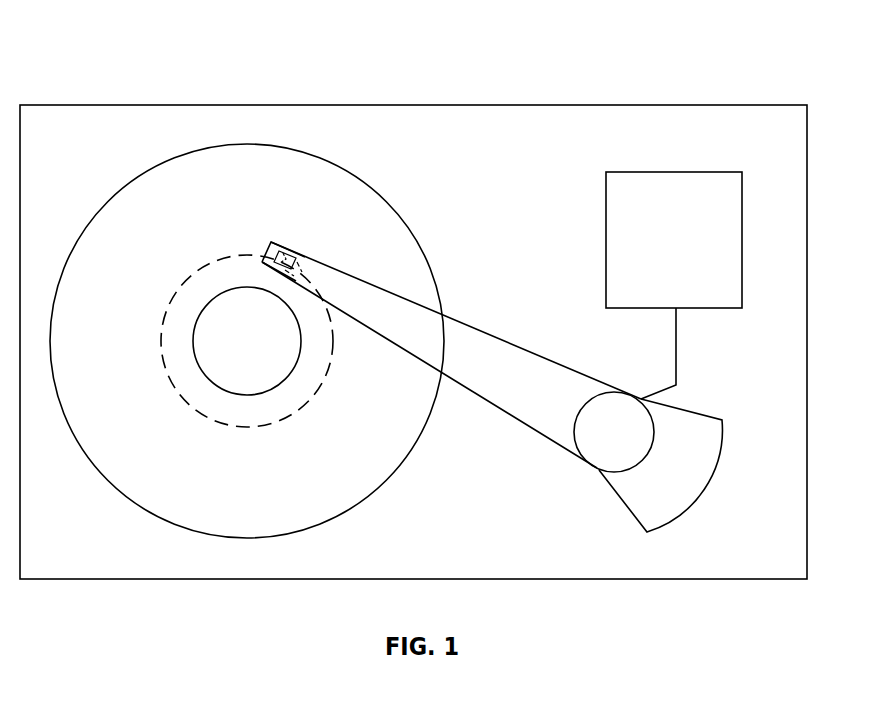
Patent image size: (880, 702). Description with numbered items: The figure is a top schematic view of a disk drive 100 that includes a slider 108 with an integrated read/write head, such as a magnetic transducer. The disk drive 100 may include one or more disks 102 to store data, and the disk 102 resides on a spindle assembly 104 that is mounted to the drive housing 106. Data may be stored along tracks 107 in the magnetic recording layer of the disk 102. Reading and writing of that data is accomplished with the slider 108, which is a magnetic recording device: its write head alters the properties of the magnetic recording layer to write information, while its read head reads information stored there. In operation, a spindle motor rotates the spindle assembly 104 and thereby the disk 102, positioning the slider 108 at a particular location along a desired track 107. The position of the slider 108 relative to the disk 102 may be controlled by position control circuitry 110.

The disk drive 100 is at (197, 73).
The disk 102 is at (366, 178).
The spindle assembly 104 is at (263, 343).
The drive housing 106 is at (541, 105).
The tracks 107 is at (222, 257).
The slider 108 is at (296, 257).
The position control circuitry 110 is at (657, 253).